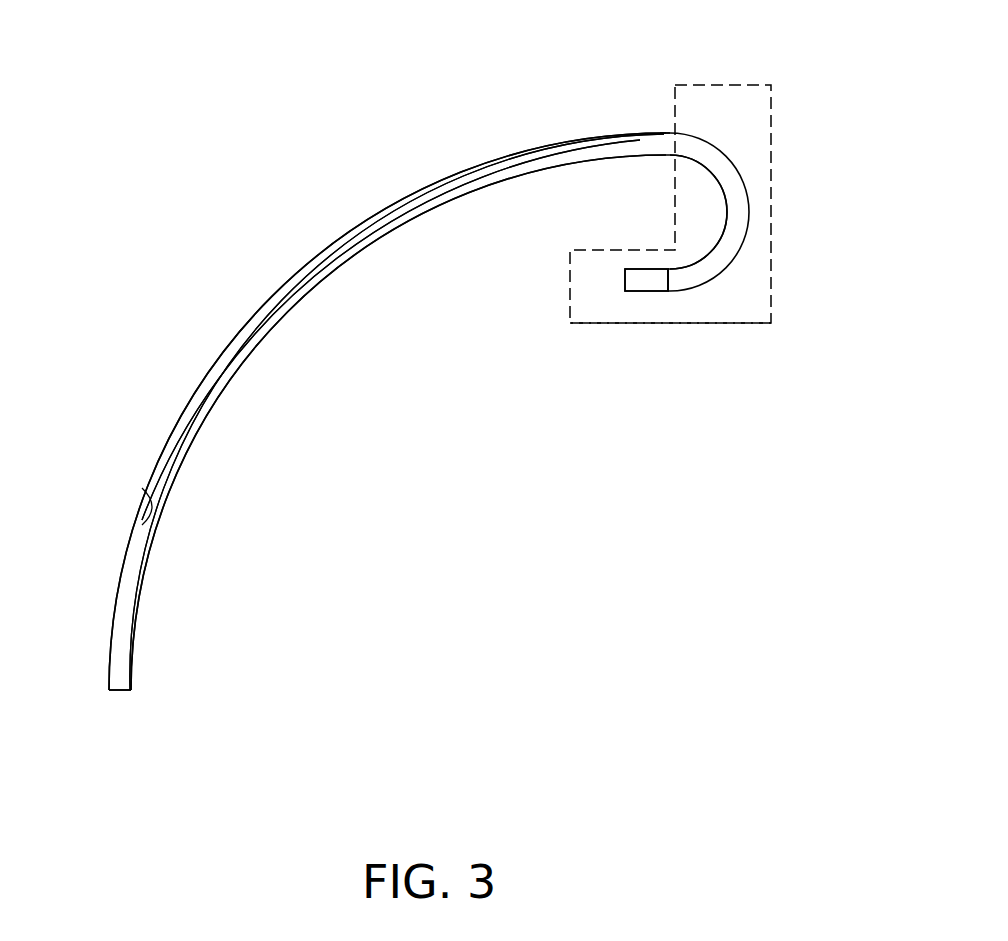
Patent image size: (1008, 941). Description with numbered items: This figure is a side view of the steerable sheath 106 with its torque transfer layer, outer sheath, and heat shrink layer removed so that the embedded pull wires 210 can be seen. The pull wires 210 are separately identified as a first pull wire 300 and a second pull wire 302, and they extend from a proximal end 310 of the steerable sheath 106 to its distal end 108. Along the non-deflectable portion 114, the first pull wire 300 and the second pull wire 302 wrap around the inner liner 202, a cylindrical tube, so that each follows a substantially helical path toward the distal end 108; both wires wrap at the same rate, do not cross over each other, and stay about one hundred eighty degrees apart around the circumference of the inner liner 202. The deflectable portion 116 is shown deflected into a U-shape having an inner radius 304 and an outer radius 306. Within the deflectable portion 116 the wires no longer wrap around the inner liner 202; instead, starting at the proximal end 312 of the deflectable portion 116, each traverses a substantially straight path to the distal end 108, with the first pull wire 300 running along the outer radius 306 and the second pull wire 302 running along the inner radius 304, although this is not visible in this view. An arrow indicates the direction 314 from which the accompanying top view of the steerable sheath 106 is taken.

The steerable sheath 106 is at (160, 157).
The distal end 108 is at (537, 317).
The non-deflectable portion 114 is at (202, 382).
The deflectable portion 116 is at (723, 323).
The inner liner 202 is at (321, 255).
The pull wires 210 is at (620, 141).
The first pull wire 300 is at (258, 333).
The second pull wire 302 is at (462, 181).
The inner radius 304 is at (725, 220).
The outer radius 306 is at (750, 208).
The proximal end 310 is at (122, 712).
The proximal end of deflectable portion 312 is at (667, 132).
The direction 314 is at (672, 460).